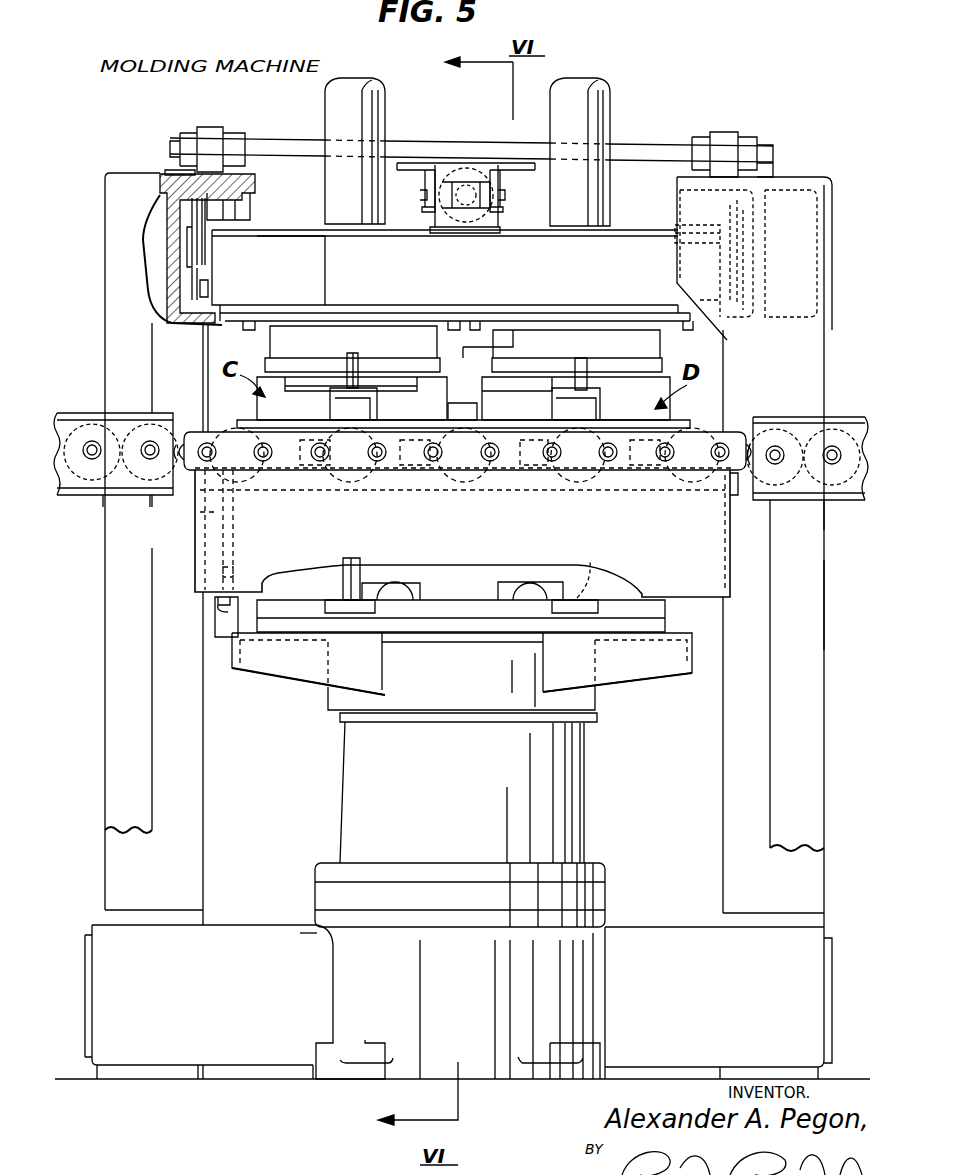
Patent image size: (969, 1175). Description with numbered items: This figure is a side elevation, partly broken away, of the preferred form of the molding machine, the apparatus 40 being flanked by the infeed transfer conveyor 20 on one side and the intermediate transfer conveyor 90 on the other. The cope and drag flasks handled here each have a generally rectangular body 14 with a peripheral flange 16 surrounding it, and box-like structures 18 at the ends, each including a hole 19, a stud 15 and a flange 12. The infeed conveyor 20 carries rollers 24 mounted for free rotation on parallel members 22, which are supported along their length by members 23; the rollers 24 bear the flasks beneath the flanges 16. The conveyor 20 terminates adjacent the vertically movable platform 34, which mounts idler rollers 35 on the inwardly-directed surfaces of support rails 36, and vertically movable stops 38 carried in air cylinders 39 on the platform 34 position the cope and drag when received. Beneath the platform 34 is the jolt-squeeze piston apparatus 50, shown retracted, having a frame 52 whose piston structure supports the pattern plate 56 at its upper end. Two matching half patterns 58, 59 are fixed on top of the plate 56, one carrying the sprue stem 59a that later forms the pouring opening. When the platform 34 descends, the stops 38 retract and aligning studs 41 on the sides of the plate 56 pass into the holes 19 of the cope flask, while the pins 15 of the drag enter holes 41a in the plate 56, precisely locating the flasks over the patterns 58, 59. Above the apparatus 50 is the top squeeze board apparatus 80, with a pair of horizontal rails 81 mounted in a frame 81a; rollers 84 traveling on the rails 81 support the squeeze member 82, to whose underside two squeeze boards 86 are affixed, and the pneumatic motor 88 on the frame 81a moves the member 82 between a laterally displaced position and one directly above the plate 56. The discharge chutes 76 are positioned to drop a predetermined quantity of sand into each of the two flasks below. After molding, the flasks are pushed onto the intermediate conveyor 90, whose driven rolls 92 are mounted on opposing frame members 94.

The flange 12 is at (297, 382).
The body 14 is at (425, 390).
The stud 15 is at (365, 342).
The peripheral flange 16 is at (250, 418).
The box-like structure 18 is at (375, 408).
The hole 19 is at (576, 390).
The infeed transfer conveyor 20 is at (808, 462).
The parallel member 22 is at (765, 488).
The support member 23 is at (797, 653).
The roller 24 is at (812, 436).
The vertically movable platform 34 is at (678, 558).
The idler roller 35 is at (678, 487).
The support rail 36 is at (458, 458).
The stop 38 is at (240, 462).
The air cylinder 39 is at (222, 616).
The molding machine apparatus 40 is at (772, 132).
The aligning stud 41 is at (348, 575).
The hole 41a is at (580, 600).
The jolt-squeeze piston apparatus 50 is at (592, 723).
The frame 52 is at (340, 969).
The pattern plate 56 is at (648, 611).
The half pattern 58 is at (506, 586).
The half pattern 59 is at (417, 586).
The sprue stem 59a is at (378, 570).
The discharge chute 76 is at (350, 208).
The top squeeze board apparatus 80 is at (470, 283).
The horizontal rail 81 is at (195, 276).
The frame 81a is at (795, 207).
The squeeze member 82 is at (292, 255).
The roller 84 is at (200, 257).
The squeeze board 86 is at (326, 365).
The pneumatic motor 88 is at (466, 170).
The intermediate transfer conveyor 90 is at (123, 455).
The driven roll 92 is at (135, 432).
The frame member 94 is at (153, 436).